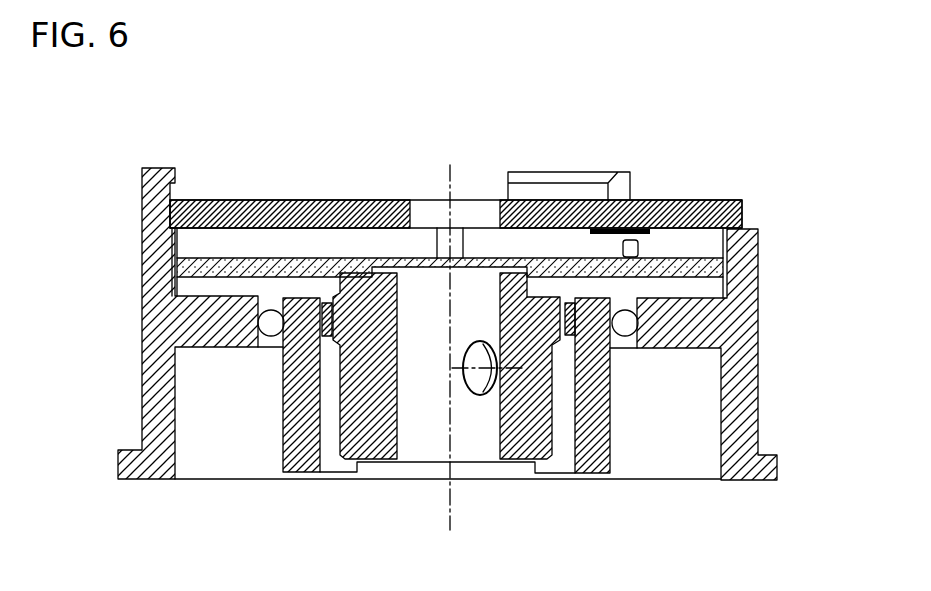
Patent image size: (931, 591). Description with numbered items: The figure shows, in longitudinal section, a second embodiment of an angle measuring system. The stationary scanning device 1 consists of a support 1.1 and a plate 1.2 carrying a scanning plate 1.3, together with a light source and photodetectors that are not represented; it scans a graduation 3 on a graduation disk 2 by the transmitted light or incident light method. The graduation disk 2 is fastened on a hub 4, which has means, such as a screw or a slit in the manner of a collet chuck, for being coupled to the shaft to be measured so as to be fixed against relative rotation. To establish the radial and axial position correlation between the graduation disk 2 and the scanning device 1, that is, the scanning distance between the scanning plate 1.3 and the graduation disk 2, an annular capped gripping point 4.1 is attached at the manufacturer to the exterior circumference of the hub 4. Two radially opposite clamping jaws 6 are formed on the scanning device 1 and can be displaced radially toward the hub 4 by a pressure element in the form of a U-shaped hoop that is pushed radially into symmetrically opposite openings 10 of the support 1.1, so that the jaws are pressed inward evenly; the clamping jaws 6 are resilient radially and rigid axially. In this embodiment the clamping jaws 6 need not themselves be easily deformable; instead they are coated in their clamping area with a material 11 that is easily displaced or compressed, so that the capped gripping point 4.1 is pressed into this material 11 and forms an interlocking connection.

The scanning device 1 is at (500, 289).
The support 1.1 is at (748, 379).
The plate 1.2 is at (724, 197).
The scanning plate 1.3 is at (640, 218).
The graduation disk 2 is at (723, 260).
The graduation 3 is at (273, 250).
The hub 4 is at (520, 468).
The capped gripping point 4.1 is at (383, 468).
The clamping jaws 6 is at (298, 470).
The openings 10 is at (273, 337).
The material 11 is at (318, 302).